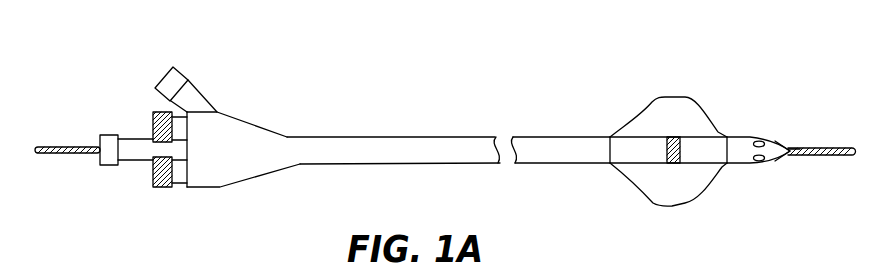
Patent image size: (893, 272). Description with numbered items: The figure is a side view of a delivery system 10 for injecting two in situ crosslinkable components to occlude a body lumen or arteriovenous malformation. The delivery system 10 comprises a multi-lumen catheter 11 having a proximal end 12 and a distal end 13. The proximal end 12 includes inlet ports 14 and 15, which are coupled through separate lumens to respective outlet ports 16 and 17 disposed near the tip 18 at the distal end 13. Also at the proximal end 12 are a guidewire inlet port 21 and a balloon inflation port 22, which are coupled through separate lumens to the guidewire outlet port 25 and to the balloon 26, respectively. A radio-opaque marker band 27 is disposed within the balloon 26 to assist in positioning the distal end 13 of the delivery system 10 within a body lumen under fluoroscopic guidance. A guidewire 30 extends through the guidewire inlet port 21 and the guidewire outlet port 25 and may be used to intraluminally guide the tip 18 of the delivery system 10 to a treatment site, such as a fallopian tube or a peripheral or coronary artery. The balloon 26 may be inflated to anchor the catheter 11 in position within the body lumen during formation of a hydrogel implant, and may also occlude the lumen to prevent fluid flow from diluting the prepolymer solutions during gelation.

The delivery system 10 is at (430, 72).
The multi-lumen catheter 11 is at (410, 147).
The proximal end 12 is at (243, 181).
The distal end 13 is at (708, 87).
The inlet port 14 is at (151, 122).
The inlet port 15 is at (153, 178).
The outlet port 16 is at (762, 141).
The outlet port 17 is at (758, 162).
The tip 18 is at (789, 158).
The guidewire inlet port 21 is at (100, 156).
The balloon inflation port 22 is at (167, 73).
The guidewire outlet port 25 is at (789, 147).
The balloon 26 is at (678, 183).
The radio-opaque marker band 27 is at (670, 138).
The guidewire 30 is at (53, 147).